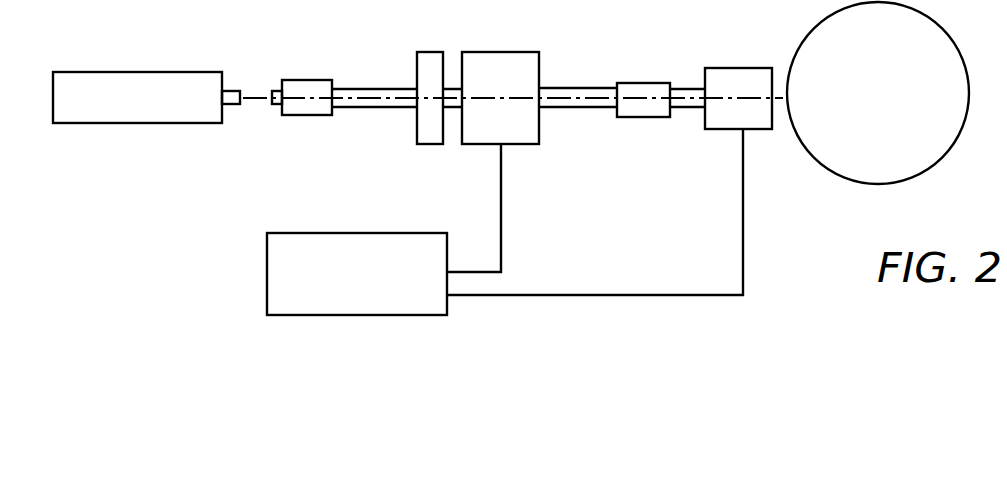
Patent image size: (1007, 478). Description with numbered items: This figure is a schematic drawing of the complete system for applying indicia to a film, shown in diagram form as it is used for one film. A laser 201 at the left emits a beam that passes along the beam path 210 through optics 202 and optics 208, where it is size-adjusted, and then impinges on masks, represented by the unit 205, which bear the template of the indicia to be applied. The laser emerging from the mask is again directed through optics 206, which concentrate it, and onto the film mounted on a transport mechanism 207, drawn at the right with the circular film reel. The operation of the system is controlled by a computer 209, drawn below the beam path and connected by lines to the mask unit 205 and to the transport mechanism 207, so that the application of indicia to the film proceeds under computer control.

The laser 201 is at (125, 70).
The optics 202 is at (318, 78).
The optical path / beam tube 210 is at (380, 85).
The optics 208 is at (436, 50).
The modulator 205 is at (532, 35).
The optics 206 is at (643, 79).
The transport mechanism 207 is at (786, 53).
The computer 209 is at (368, 230).